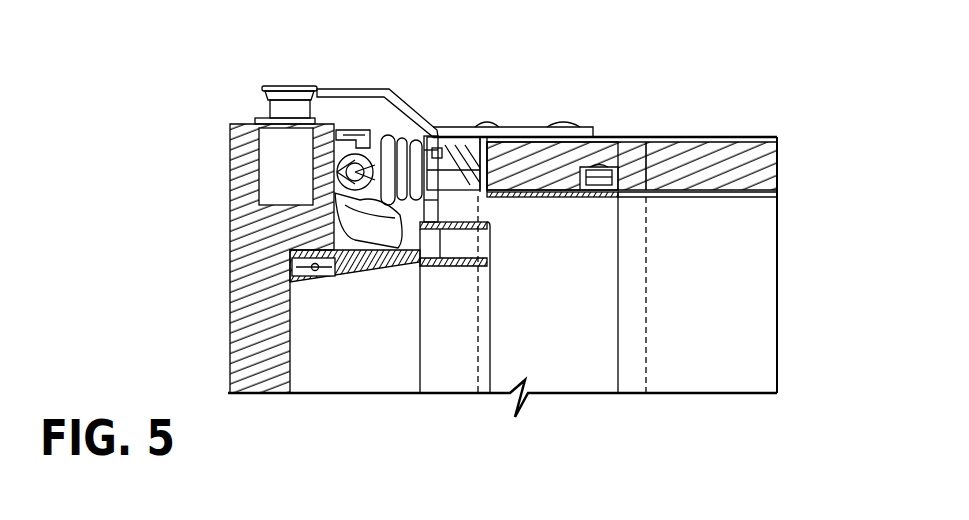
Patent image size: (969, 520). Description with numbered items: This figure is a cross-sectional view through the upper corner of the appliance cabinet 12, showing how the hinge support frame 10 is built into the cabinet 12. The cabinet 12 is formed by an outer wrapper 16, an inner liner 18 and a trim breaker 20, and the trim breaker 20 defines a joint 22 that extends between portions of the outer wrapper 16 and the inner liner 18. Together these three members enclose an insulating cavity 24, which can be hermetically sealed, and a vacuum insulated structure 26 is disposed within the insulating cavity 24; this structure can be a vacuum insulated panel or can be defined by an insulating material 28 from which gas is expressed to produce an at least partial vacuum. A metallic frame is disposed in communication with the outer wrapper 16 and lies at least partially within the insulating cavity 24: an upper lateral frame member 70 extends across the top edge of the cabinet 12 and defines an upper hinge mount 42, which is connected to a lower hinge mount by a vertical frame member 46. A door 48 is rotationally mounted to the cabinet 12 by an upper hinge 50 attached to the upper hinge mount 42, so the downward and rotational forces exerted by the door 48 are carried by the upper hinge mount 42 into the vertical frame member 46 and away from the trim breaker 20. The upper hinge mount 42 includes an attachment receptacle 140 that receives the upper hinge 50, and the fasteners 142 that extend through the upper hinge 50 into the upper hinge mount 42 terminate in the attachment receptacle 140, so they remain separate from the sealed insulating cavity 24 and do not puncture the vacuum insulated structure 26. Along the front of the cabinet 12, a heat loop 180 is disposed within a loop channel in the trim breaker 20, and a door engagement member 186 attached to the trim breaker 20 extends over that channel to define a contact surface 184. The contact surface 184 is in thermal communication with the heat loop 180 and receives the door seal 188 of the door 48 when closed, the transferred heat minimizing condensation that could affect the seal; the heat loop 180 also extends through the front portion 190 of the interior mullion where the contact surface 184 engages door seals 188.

The hinge support frame 10 is at (360, 60).
The cabinet 12 is at (785, 113).
The outer wrapper 16 is at (707, 137).
The inner liner 18 is at (722, 196).
The trim breaker 20 is at (448, 262).
The joint 22 is at (460, 127).
The insulating cavity 24 is at (684, 197).
The vacuum insulated structure 26 is at (785, 137).
The insulating material 28 is at (757, 170).
The upper hinge mount 42 is at (533, 122).
The vertical frame member 46 is at (582, 358).
The door 48 is at (226, 276).
The upper hinge 50 is at (297, 85).
The upper lateral frame member 70 is at (645, 138).
The attachment receptacle 140 is at (519, 152).
The fastener 142 is at (563, 127).
The heat loop 180 is at (436, 128).
The contact surface 184 is at (347, 172).
The door engagement member 186 is at (333, 147).
The door seal 188 is at (375, 265).
The front portion 190 is at (425, 265).